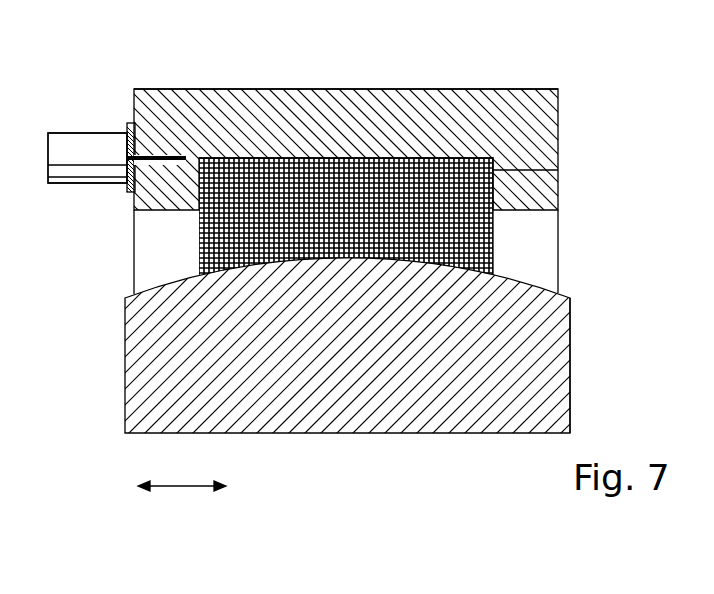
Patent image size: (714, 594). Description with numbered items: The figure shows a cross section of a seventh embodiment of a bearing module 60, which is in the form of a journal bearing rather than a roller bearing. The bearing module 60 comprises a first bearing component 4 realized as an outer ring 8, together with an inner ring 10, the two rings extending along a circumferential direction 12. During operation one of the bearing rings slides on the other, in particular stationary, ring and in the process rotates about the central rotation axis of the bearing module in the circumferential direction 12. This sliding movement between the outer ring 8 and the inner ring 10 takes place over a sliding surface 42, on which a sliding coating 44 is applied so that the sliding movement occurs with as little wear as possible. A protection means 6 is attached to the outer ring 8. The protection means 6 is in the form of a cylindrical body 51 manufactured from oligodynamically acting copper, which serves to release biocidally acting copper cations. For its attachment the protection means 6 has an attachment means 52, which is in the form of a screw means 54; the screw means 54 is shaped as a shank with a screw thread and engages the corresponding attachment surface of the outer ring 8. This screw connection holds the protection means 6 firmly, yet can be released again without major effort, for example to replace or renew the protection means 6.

The first bearing component 4 is at (378, 89).
The protection means 6 is at (62, 132).
The outer ring 8 is at (449, 101).
The inner ring 10 is at (363, 417).
The circumferential direction 12 is at (185, 487).
The sliding surface 42 is at (450, 157).
The sliding coating 44 is at (498, 171).
The cylindrical body 51 is at (102, 148).
The attachment means 52 is at (163, 163).
The screw means 54 is at (150, 155).
The bearing module 60 is at (583, 388).